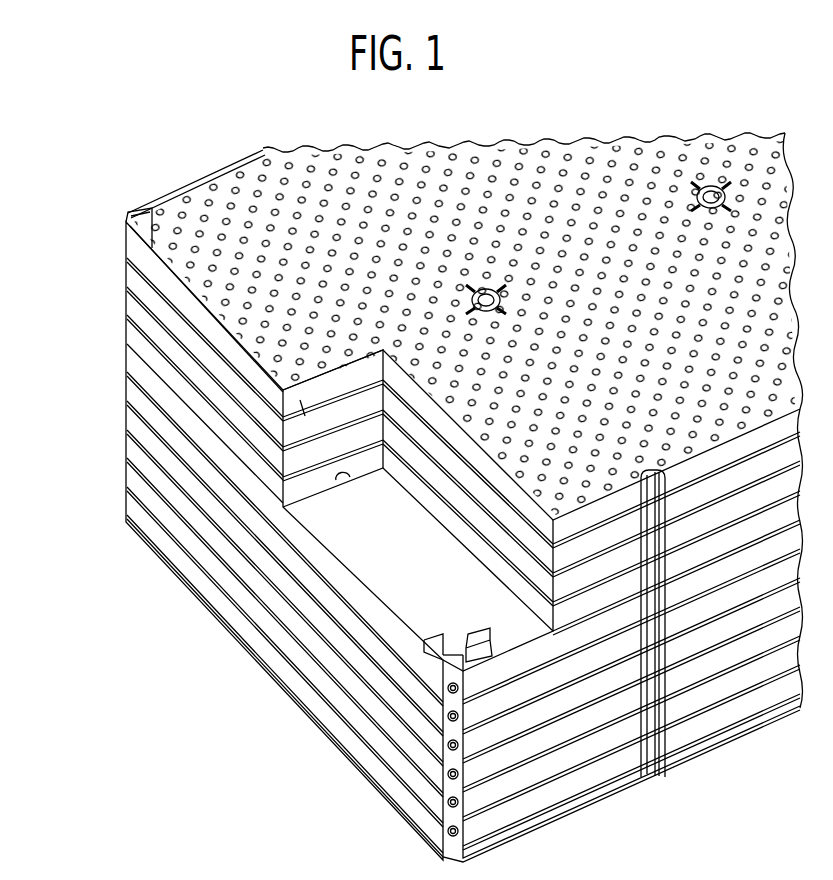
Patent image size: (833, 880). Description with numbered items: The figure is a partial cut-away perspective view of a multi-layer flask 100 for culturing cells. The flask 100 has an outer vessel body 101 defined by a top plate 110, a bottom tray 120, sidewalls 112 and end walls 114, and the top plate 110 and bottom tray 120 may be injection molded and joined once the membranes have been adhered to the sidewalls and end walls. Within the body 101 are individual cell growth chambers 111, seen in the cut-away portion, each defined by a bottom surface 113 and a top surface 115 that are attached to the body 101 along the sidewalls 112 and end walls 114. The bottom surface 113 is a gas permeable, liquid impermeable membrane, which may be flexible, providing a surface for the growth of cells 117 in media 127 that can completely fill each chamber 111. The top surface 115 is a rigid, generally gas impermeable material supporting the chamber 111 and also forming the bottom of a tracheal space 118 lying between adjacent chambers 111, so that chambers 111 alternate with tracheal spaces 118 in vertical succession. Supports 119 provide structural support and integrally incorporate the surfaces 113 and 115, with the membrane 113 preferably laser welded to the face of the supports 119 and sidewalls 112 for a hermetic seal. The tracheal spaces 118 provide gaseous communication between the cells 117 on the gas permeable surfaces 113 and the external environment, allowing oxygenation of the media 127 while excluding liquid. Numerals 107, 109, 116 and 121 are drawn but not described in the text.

The multi-layer flask 100 is at (110, 170).
The outer vessel body 101 is at (628, 160).
The corner support 107 is at (125, 219).
The cutout floor 109 is at (403, 633).
The top plate 110 is at (220, 192).
The cell growth chamber 111 is at (597, 548).
The sidewall 112 is at (796, 700).
The bottom surface 113 is at (412, 483).
The end wall 114 is at (168, 530).
The top surface 115 is at (428, 447).
The seam line 116 is at (303, 412).
The cells 117 is at (346, 478).
The tracheal space 118 is at (500, 572).
The support 119 is at (498, 288).
The bottom tray 120 is at (450, 776).
The post hole 121 is at (450, 804).
The media 127 is at (310, 489).